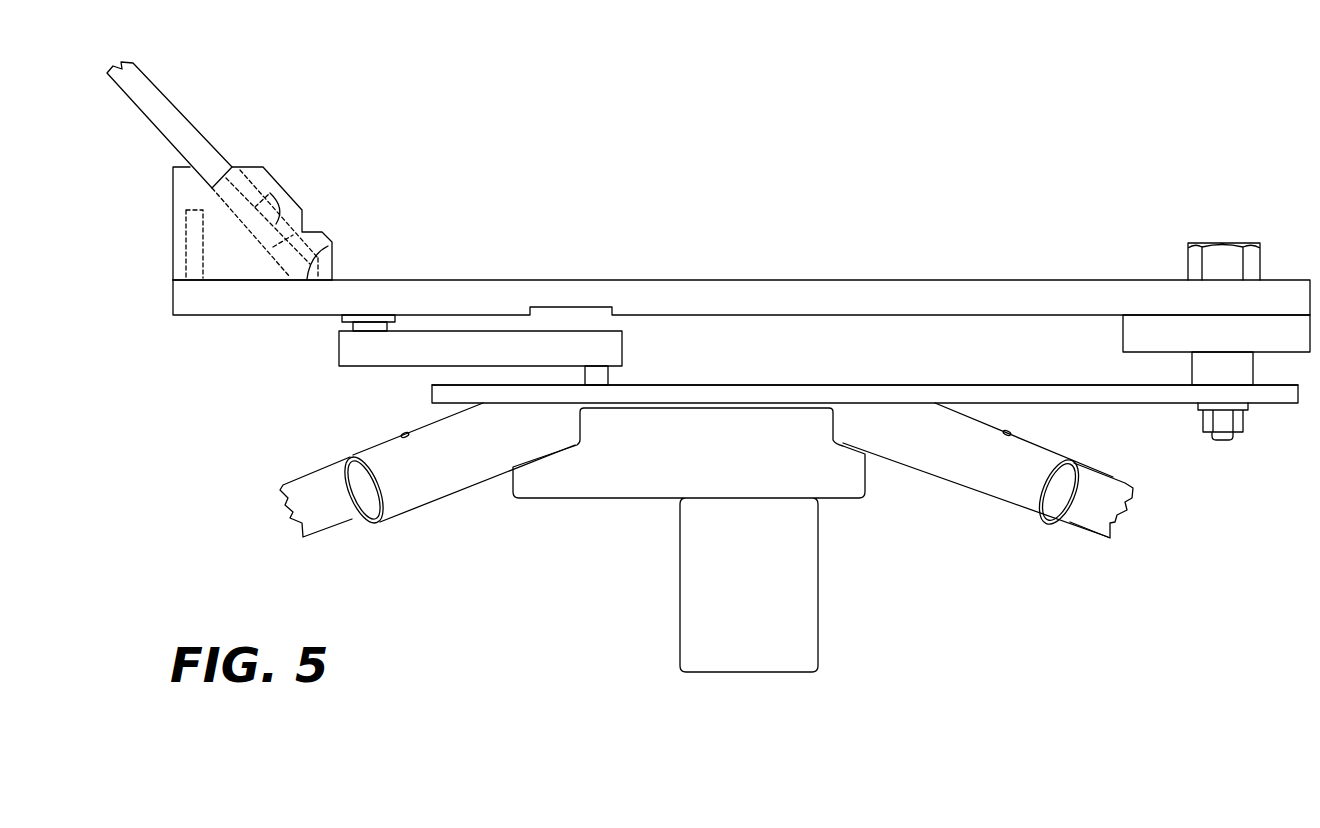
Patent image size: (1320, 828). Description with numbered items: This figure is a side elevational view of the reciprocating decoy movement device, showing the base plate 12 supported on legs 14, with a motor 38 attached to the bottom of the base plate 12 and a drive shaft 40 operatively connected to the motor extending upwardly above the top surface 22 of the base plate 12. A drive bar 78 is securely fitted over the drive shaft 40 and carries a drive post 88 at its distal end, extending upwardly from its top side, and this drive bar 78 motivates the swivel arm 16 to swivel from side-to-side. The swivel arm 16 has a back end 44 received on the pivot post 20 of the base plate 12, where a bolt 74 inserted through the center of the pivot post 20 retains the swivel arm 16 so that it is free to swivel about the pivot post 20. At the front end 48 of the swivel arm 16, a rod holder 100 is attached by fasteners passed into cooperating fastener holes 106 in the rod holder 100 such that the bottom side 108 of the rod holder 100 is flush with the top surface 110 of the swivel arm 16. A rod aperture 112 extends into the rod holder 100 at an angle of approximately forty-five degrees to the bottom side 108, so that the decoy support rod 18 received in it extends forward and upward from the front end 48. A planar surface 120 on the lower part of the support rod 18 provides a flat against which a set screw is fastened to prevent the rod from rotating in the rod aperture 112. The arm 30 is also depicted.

The base plate 12 is at (1098, 403).
The legs 14 is at (302, 480).
The swivel arm 16 is at (745, 280).
The decoy support rod 18 is at (170, 100).
The pivot post 20 is at (1255, 358).
The top surface 22 is at (888, 385).
The arm 30 is at (440, 497).
The motor 38 is at (664, 537).
The drive shaft 40 is at (608, 372).
The back end 44 is at (1200, 327).
The front end 48 is at (236, 250).
The bolt 74 is at (1223, 245).
The drive bar 78 is at (397, 368).
The drive post 88 is at (342, 327).
The rod holder 100 is at (277, 180).
The fastener holes 106 is at (303, 230).
The bottom side 108 is at (242, 282).
The top surface 110 is at (307, 277).
The rod aperture 112 is at (277, 217).
The planar surface 120 is at (240, 193).